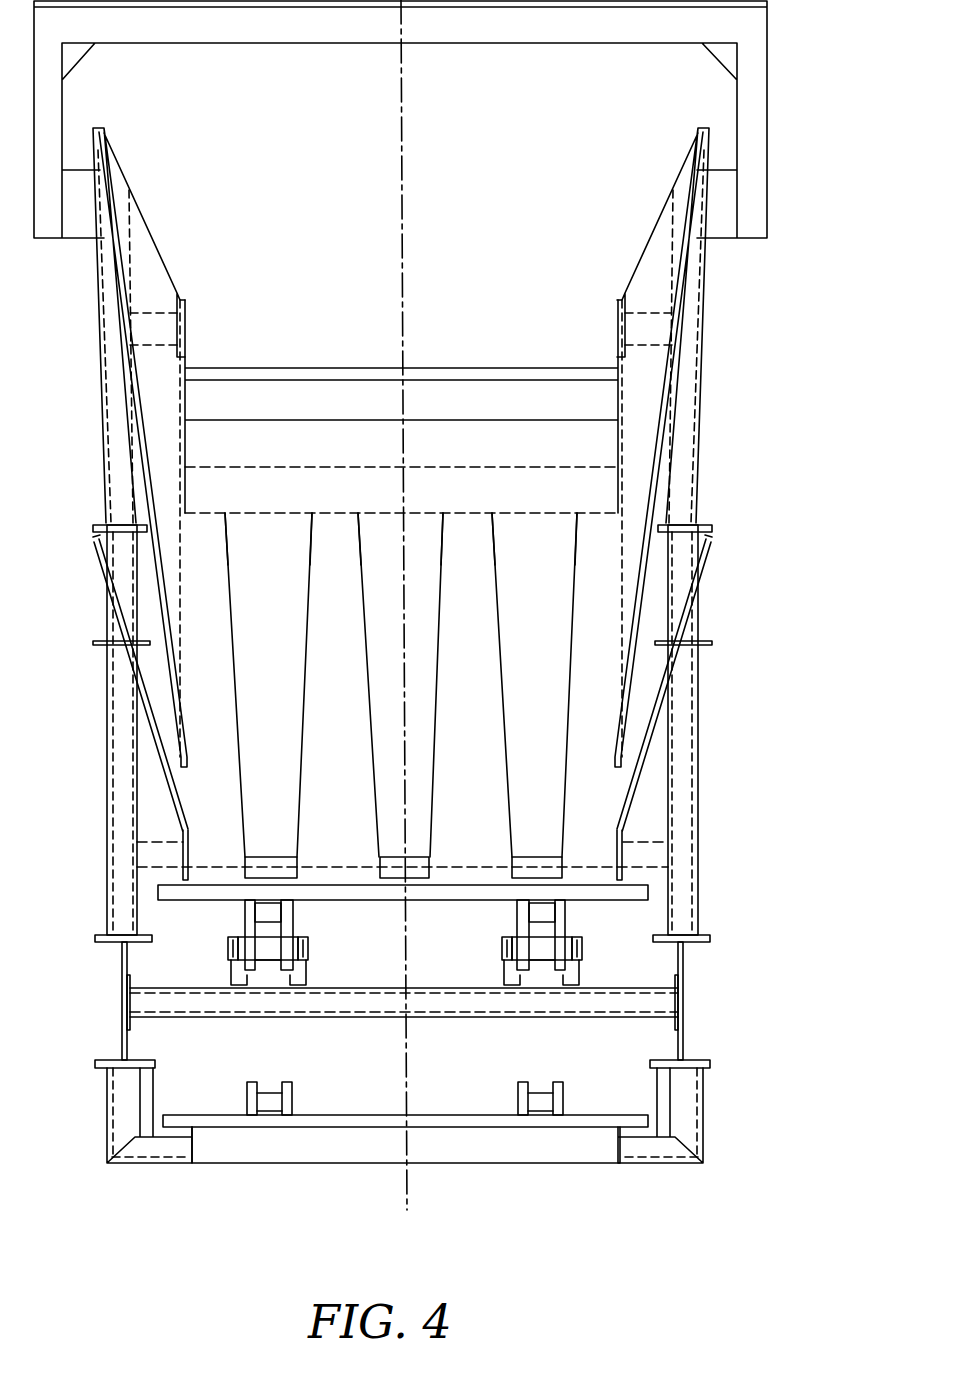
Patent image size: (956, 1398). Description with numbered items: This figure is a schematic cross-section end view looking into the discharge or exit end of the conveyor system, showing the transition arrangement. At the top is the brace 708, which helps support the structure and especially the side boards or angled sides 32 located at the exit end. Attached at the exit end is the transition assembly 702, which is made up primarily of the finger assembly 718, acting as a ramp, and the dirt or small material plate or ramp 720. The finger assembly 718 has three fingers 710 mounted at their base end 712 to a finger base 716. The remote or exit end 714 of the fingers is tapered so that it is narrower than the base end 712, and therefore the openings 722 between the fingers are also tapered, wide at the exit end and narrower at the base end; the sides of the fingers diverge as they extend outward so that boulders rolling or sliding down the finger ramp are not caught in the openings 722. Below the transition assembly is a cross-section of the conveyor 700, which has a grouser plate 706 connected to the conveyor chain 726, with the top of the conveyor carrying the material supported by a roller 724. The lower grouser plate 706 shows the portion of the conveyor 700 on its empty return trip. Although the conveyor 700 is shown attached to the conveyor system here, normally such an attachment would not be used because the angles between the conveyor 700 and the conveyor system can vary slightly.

The conveyor 700 is at (712, 1134).
The transition assembly 702 is at (372, 398).
The grouser plate 706 is at (175, 894).
The brace 708 is at (365, 39).
The fingers 710 is at (293, 662).
The base end 712 is at (238, 516).
The exit end of the fingers 714 is at (265, 866).
The finger base 716 is at (434, 501).
The finger assembly 718 is at (345, 801).
The dirt plate 720 is at (453, 867).
The openings 722 is at (362, 724).
The roller 724 is at (298, 928).
The conveyor chain 726 is at (247, 915).
The angled sides 32 is at (140, 204).